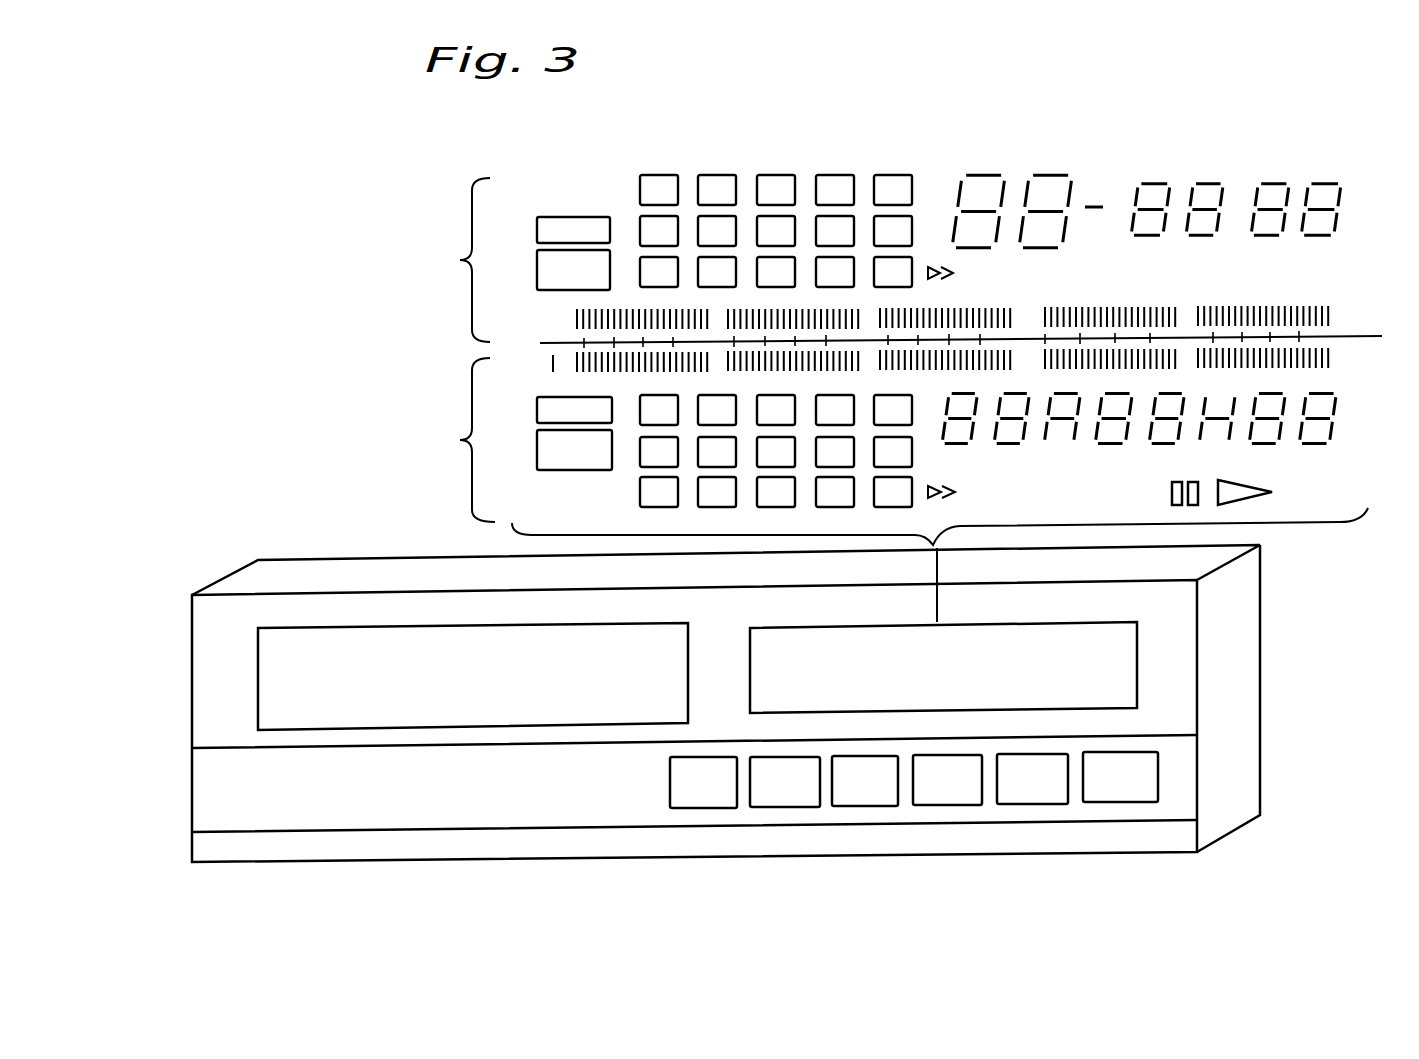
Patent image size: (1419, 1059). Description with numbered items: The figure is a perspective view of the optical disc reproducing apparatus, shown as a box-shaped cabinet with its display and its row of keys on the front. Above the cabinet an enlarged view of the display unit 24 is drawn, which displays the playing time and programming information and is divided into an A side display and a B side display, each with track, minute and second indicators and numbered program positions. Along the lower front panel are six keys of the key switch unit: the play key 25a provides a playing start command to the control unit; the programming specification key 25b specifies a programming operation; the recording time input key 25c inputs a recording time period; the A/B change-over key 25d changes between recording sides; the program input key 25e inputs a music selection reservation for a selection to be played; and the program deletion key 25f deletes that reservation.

The display unit 24 is at (823, 373).
The play key 25a is at (1137, 802).
The programming specification key 25b is at (1047, 804).
The recording time input key 25c is at (957, 805).
The A/B change-over key 25d is at (870, 806).
The program input key 25e is at (792, 807).
The program deletion key 25f is at (703, 808).